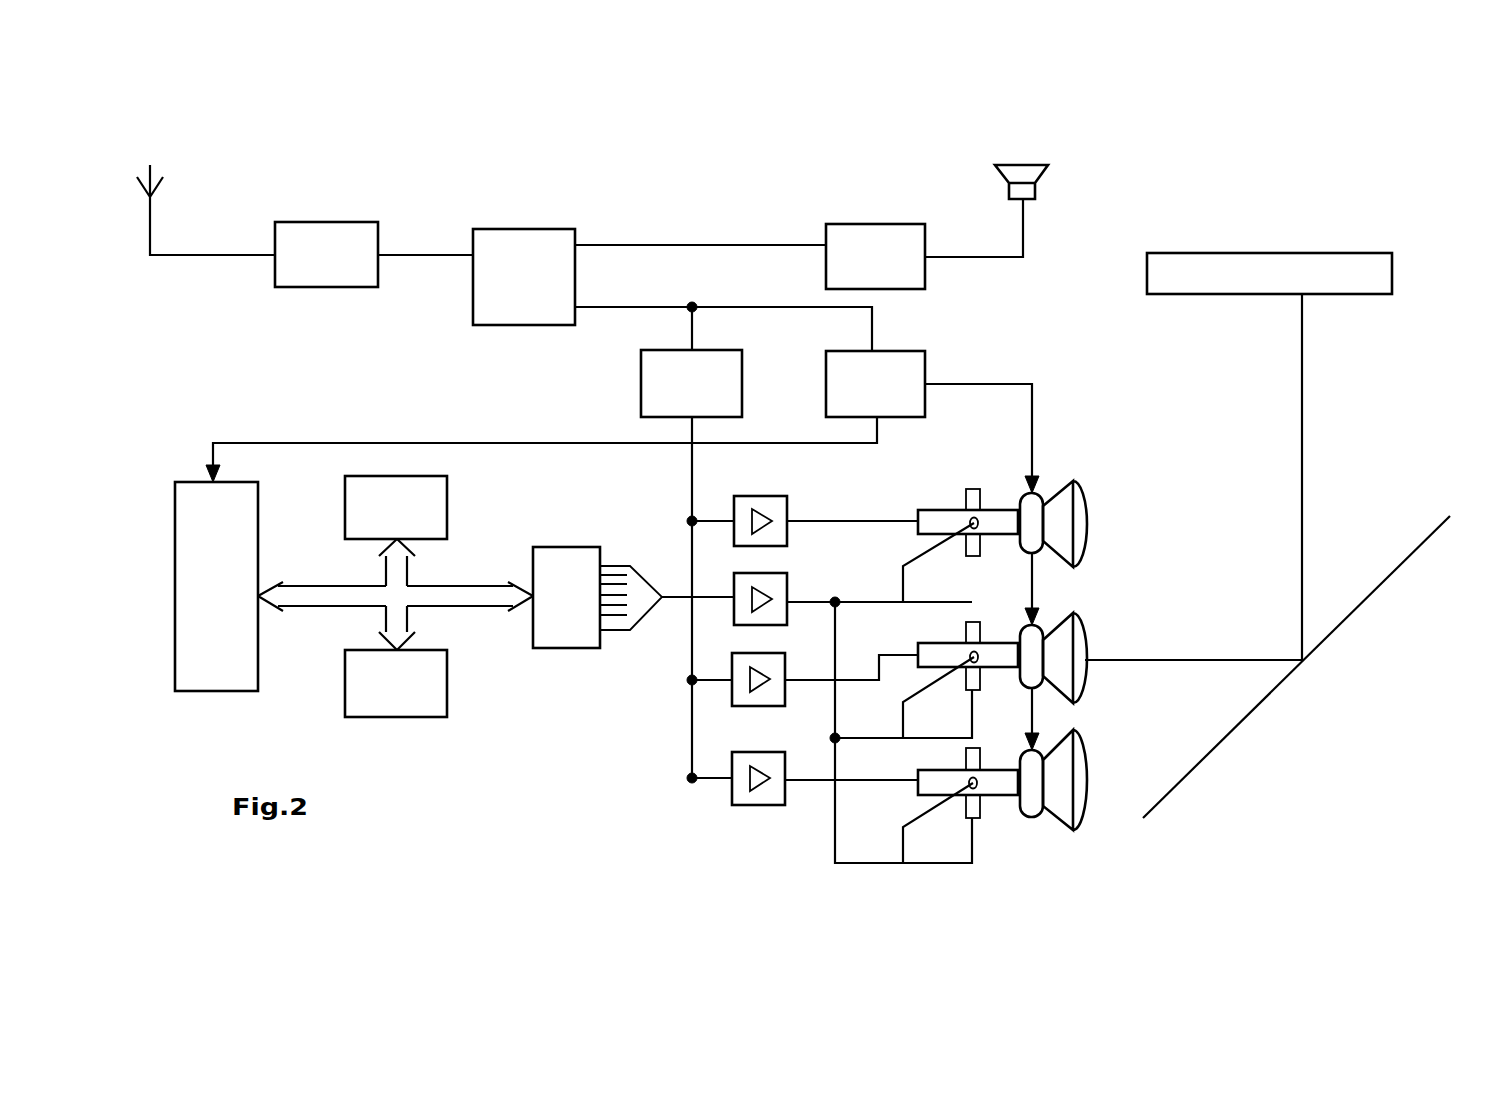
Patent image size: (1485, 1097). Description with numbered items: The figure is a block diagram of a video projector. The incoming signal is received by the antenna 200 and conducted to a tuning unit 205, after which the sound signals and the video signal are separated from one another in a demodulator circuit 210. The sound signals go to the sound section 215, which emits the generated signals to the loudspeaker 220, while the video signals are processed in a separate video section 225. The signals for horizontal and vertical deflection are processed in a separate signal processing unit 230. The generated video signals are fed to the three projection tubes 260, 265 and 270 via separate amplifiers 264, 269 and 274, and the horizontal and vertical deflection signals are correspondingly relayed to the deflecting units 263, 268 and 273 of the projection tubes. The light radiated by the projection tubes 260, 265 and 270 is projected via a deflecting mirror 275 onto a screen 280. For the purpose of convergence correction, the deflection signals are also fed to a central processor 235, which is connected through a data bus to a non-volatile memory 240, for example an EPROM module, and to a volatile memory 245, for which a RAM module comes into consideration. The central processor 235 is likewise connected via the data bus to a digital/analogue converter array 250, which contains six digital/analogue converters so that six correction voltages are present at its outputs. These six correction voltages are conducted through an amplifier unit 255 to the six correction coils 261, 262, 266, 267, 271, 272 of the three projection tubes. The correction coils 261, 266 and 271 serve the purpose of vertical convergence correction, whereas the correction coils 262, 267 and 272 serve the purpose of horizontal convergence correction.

The antenna 200 is at (153, 162).
The tuning unit 205 is at (313, 222).
The demodulator circuit 210 is at (535, 228).
The sound section 215 is at (868, 223).
The loudspeaker 220 is at (1018, 165).
The video section 225 is at (640, 393).
The signal processing unit 230 is at (897, 351).
The central processor 235 is at (242, 657).
The non-volatile memory 240 is at (448, 503).
The volatile memory 245 is at (390, 717).
The digital/analogue converter array 250 is at (558, 547).
The amplifier unit 255 is at (788, 585).
The projection tube 260 is at (1085, 500).
The correction coil 261 is at (967, 500).
The correction coil 262 is at (977, 520).
The deflecting unit 263 is at (1035, 500).
The amplifier 264 is at (757, 493).
The projection tube 265 is at (1085, 648).
The correction coil 266 is at (977, 623).
The correction coil 267 is at (978, 659).
The deflecting unit 268 is at (1037, 633).
The amplifier 269 is at (770, 655).
The projection tube 270 is at (1083, 787).
The correction coil 271 is at (977, 760).
The correction coil 272 is at (976, 790).
The deflecting unit 273 is at (1037, 753).
The amplifier 274 is at (758, 752).
The deflecting mirror 275 is at (1340, 627).
The screen 280 is at (1298, 252).